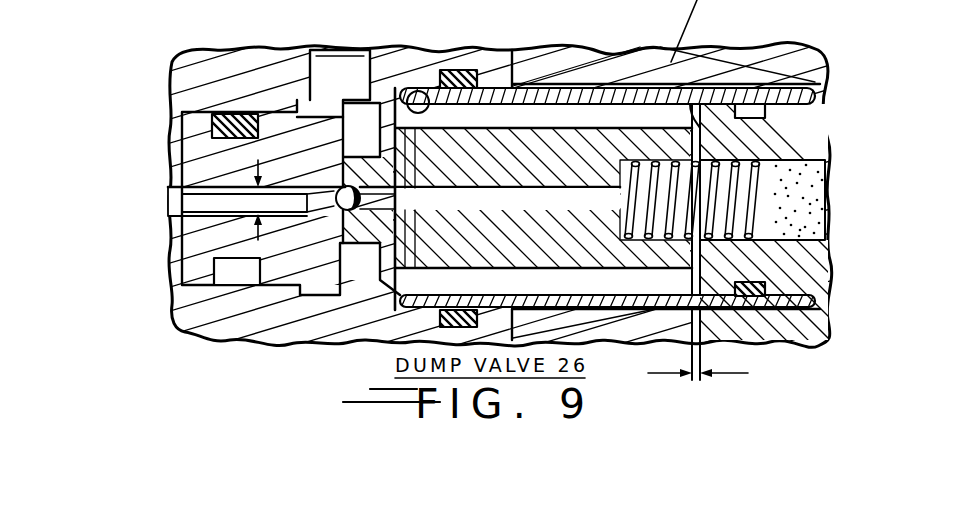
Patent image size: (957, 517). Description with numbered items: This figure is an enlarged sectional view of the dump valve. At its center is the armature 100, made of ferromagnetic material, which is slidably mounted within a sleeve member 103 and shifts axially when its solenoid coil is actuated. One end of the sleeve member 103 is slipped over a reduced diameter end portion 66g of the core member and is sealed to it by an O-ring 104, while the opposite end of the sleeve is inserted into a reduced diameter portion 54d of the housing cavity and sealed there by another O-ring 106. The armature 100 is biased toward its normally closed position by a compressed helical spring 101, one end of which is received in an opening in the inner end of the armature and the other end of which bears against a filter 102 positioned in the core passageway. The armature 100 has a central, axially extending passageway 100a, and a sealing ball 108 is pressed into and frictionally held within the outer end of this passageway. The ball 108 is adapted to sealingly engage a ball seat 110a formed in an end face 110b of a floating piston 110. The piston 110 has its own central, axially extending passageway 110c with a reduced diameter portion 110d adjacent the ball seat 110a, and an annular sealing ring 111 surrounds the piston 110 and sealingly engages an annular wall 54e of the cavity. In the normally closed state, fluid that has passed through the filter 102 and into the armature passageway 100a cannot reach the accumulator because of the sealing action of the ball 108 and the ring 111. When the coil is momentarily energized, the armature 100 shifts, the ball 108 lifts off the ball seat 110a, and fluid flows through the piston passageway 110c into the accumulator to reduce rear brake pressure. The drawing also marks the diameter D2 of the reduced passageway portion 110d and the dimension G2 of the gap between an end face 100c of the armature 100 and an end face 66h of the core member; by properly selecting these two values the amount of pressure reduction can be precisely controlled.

The armature 100 is at (379, 280).
The central axially extending passageway 100a is at (598, 65).
The end face of the armature 100c is at (775, 316).
The helical spring 101 is at (773, 212).
The filter 102 is at (814, 174).
The sleeve member 103 is at (545, 104).
The O-ring 104 is at (756, 108).
The O-ring 106 is at (467, 73).
The sealing ball 108 is at (338, 190).
The floating piston 110 is at (191, 110).
The ball seat 110a is at (395, 200).
The end face of the floating piston 110b is at (349, 100).
The central axially extending passageway of the piston 110c is at (162, 200).
The reduced diameter portion 110d is at (323, 193).
The annular sealing ring 111 is at (218, 288).
The reduced diameter portion of the cavity 54d is at (408, 92).
The annular wall of the cavity 54e is at (267, 110).
The reduced diameter end portion of the core member 66g is at (812, 120).
The end face of the core member 66h is at (685, 98).
The diameter of the passageway D2 is at (180, 213).
The gap dimension G2 is at (724, 371).